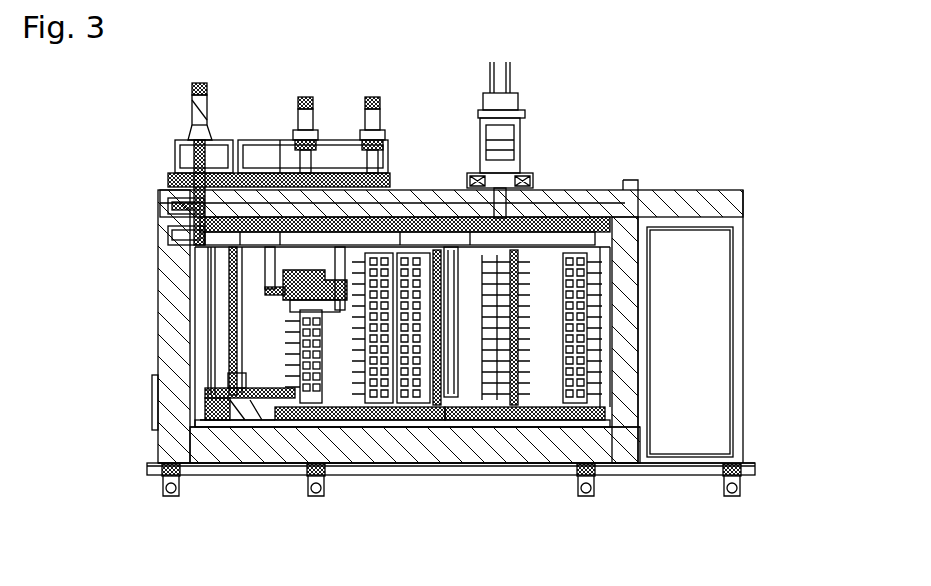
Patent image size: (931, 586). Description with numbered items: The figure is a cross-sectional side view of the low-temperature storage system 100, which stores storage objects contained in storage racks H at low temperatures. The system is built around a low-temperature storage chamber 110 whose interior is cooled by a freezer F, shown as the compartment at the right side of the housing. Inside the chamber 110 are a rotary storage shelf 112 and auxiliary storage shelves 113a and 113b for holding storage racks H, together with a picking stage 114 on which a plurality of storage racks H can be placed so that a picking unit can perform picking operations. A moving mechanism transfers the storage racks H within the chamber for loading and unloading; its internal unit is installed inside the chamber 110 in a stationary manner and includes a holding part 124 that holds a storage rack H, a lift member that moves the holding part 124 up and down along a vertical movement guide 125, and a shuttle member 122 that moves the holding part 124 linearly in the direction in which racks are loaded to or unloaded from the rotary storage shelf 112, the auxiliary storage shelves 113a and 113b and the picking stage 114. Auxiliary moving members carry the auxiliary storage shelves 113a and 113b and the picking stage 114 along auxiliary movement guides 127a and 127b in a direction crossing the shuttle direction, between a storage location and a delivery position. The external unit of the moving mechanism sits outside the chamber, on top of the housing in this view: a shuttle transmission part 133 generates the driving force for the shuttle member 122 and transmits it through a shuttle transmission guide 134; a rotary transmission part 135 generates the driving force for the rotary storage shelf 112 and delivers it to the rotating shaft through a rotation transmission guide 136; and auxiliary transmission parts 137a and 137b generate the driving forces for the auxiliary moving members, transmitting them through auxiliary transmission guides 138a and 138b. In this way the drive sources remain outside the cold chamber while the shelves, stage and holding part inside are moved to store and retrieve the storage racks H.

The low-temperature storage system 100 is at (94, 75).
The low-temperature storage chamber 110 is at (743, 190).
The rotary storage shelf 112 is at (421, 432).
The auxiliary storage shelf 113a is at (360, 349).
The auxiliary storage shelf 113b is at (293, 347).
The picking stage 114 is at (300, 272).
The shuttle member 122 is at (545, 200).
The holding part 124 is at (257, 424).
The vertical movement guide 125 is at (237, 250).
The auxiliary movement guide 127a is at (368, 432).
The auxiliary movement guide 127b is at (311, 432).
The shuttle transmission part 133 is at (203, 83).
The shuttle transmission guide 134 is at (192, 163).
The rotary transmission part 135 is at (490, 102).
The rotation transmission guide 136 is at (500, 214).
The auxiliary transmission part 137a is at (373, 97).
The auxiliary transmission part 137b is at (304, 97).
The auxiliary transmission guide 138a is at (200, 240).
The auxiliary transmission guide 138b is at (200, 206).
The storage rack H is at (262, 438).
The freezer F is at (737, 352).